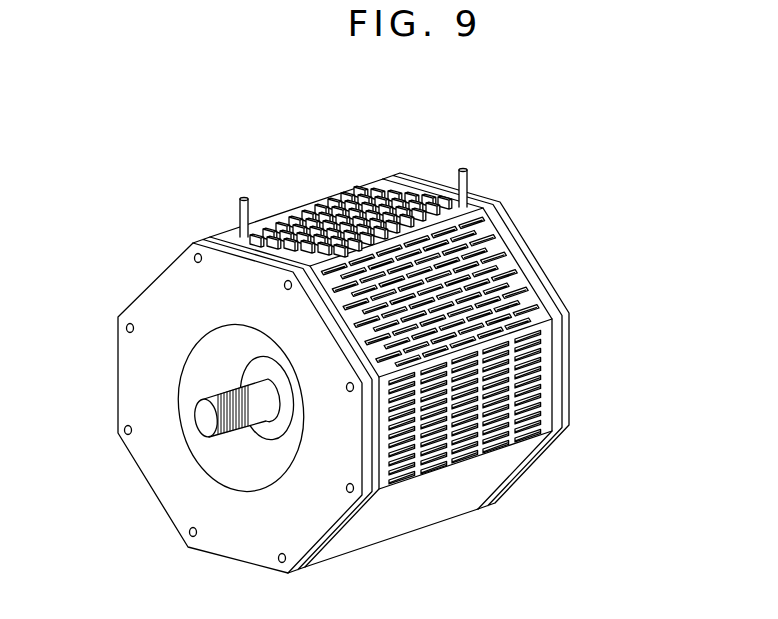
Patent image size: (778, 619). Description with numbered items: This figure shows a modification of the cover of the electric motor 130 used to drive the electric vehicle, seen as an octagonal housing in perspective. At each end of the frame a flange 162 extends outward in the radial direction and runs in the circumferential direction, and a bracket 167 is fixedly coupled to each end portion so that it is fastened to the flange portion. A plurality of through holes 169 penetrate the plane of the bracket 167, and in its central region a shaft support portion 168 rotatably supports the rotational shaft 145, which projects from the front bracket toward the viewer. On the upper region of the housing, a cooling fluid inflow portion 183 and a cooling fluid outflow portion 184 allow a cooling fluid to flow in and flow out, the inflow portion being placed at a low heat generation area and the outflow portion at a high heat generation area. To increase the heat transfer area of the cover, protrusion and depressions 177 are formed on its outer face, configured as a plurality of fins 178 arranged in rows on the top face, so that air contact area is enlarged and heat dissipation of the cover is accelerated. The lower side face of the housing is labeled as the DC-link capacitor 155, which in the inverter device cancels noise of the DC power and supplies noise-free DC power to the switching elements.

The electric motor 130 is at (142, 250).
The rotational shaft 145 is at (205, 417).
The DC-link capacitor 155 is at (423, 508).
The flange 162 is at (523, 242).
The bracket 167 is at (341, 373).
The shaft support portion 168 is at (276, 418).
The through hole 169 is at (124, 430).
The protrusion and depressions 177 is at (351, 161).
The fin 178 is at (281, 208).
The cooling fluid inflow portion 183 is at (243, 197).
The cooling fluid outflow portion 184 is at (464, 170).